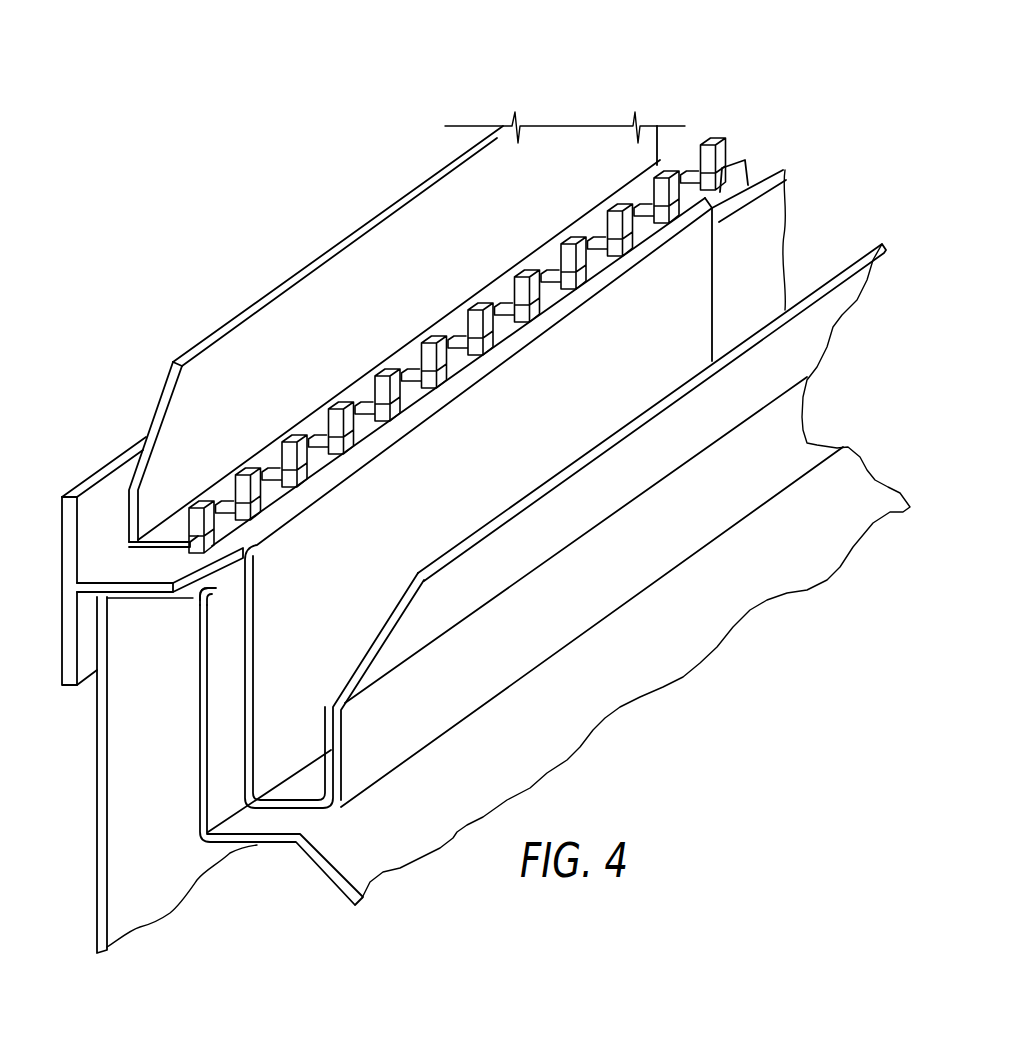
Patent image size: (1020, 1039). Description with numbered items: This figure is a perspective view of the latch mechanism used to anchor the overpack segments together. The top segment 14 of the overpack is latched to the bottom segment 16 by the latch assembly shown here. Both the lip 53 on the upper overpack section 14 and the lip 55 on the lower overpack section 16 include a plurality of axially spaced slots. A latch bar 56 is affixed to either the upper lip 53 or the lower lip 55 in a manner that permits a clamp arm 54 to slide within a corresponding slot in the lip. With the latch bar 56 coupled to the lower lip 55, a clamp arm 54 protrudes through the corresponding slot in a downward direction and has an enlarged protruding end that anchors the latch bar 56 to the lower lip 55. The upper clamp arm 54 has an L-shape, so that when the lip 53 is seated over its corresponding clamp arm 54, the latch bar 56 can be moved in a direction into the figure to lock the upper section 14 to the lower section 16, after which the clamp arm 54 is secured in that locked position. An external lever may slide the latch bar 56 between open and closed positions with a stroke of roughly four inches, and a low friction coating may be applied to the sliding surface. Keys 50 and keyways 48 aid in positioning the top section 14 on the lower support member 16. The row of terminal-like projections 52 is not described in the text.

The top segment 14 is at (305, 266).
The bottom segment 16 is at (93, 740).
The keyways 48 is at (203, 840).
The keys 50 is at (307, 790).
The terminal pins 52 is at (748, 143).
The lip 53 is at (173, 530).
The clamp arm 54 is at (201, 501).
The lip 55 is at (195, 598).
The latch bar 56 is at (88, 473).